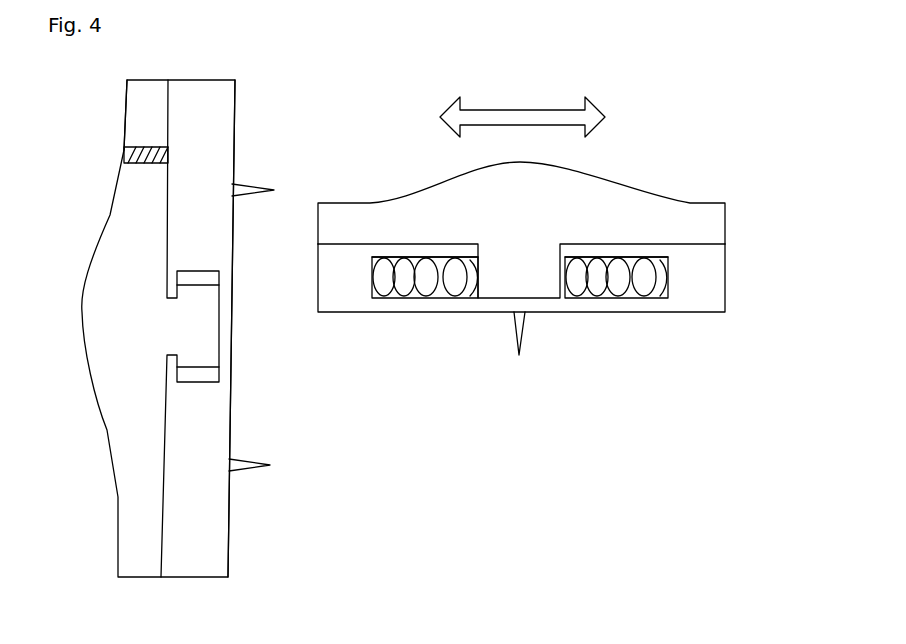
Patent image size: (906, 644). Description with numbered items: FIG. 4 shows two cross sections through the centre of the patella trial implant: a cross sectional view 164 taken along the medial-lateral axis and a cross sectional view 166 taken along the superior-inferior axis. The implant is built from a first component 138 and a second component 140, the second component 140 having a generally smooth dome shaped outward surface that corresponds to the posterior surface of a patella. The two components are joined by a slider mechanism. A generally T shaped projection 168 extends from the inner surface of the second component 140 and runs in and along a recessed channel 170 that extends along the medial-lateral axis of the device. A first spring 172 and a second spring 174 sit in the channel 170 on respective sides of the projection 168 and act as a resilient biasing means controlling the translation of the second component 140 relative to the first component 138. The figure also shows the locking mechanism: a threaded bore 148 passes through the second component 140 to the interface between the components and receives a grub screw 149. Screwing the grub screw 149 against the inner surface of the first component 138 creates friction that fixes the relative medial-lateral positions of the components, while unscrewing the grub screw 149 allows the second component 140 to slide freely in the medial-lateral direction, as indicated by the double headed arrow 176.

The first component 138 is at (205, 580).
The second component 140 is at (135, 580).
The threaded bore 148 is at (102, 161).
The grub screw 149 is at (145, 142).
The cross sectional view 164 is at (772, 125).
The cross sectional view 166 is at (300, 111).
The T shaped projection 168 is at (202, 330).
The recessed channel 170 is at (210, 278).
The first spring 172 is at (395, 268).
The second spring 174 is at (625, 270).
The double headed arrow 176 is at (517, 110).